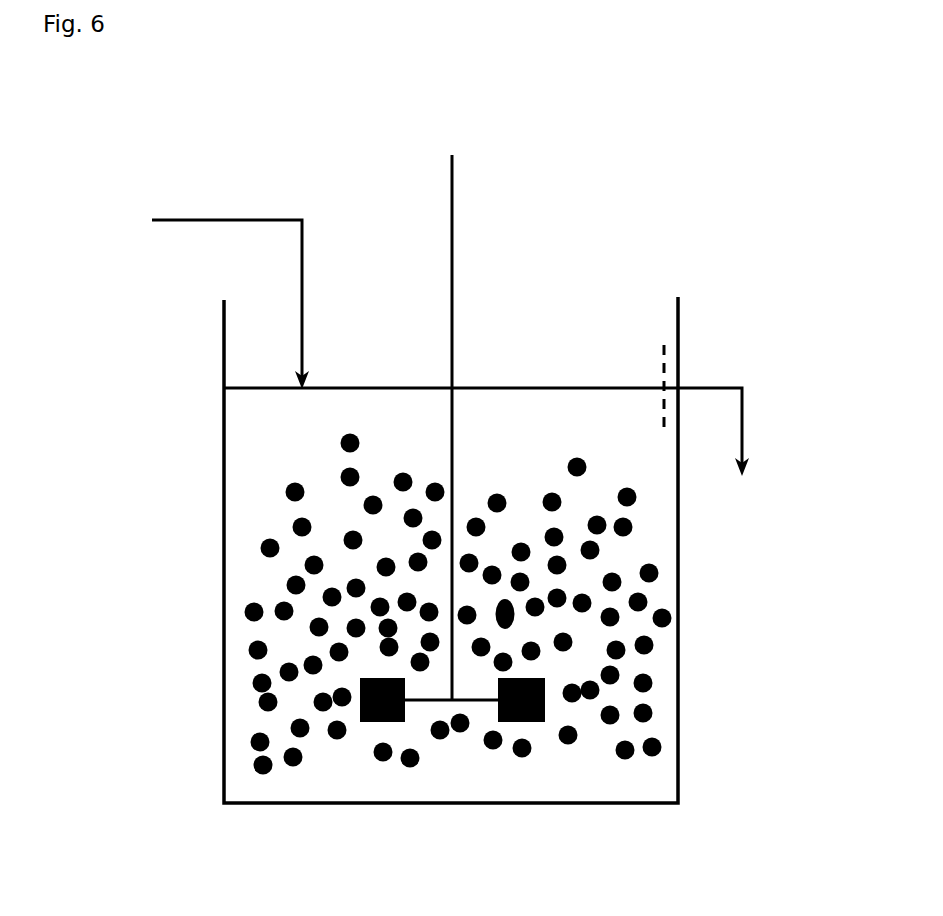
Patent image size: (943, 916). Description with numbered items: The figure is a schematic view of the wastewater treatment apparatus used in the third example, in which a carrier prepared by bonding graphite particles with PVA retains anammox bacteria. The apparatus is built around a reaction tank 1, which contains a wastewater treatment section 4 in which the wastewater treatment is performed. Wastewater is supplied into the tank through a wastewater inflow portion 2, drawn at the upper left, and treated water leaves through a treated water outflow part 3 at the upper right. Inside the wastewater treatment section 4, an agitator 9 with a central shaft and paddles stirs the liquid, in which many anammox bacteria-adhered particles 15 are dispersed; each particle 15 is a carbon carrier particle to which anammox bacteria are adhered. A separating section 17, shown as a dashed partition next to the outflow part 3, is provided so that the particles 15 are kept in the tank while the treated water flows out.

The reaction tank 1 is at (224, 345).
The wastewater inflow portion 2 is at (230, 286).
The treated water outflow part 3 is at (723, 432).
The wastewater treatment section 4 is at (240, 567).
The agitator 9 is at (452, 217).
The anammox bacteria-adhered particle 15 is at (650, 573).
The separating section 17 is at (665, 378).